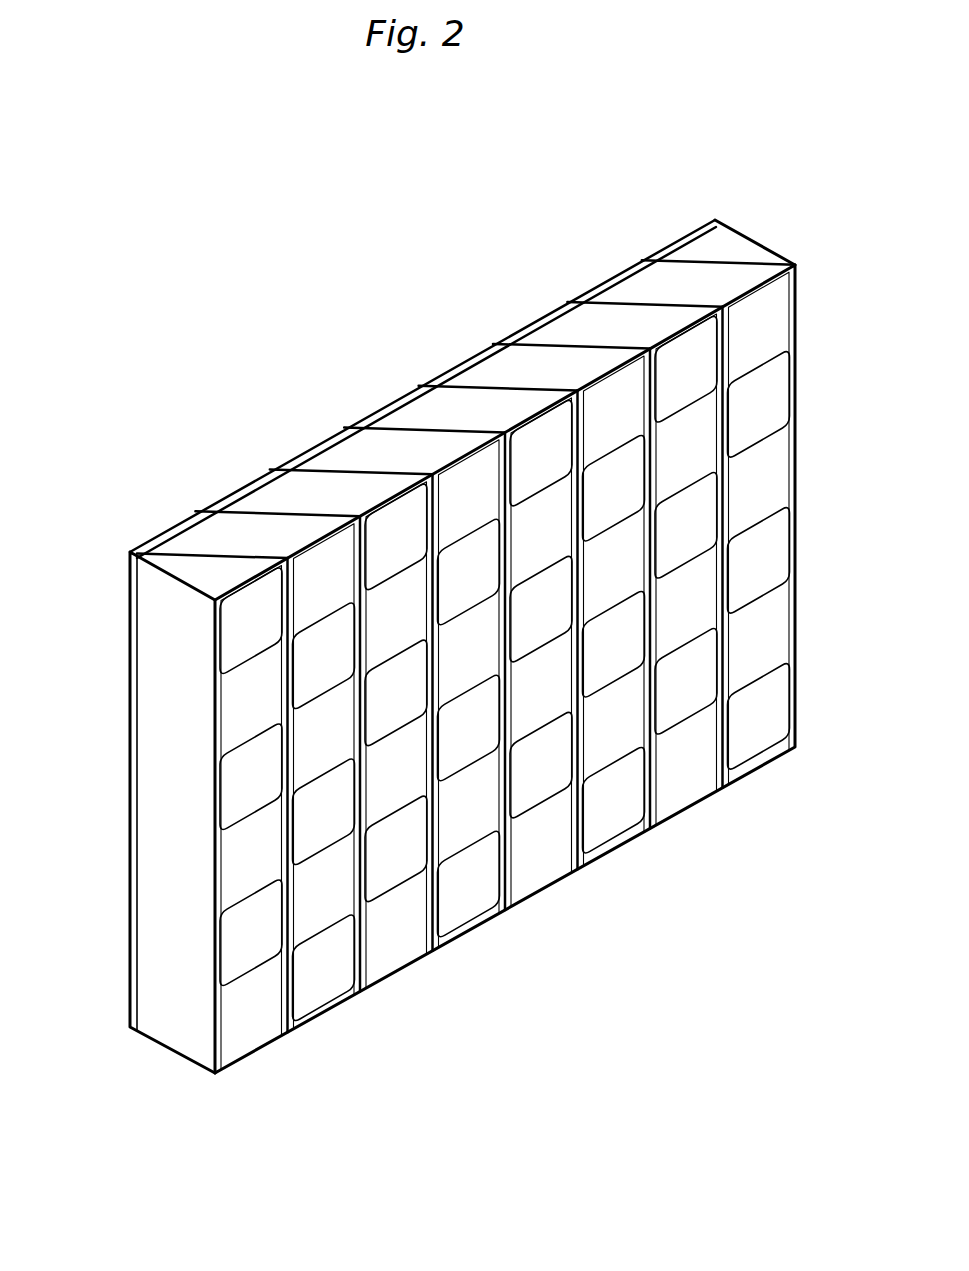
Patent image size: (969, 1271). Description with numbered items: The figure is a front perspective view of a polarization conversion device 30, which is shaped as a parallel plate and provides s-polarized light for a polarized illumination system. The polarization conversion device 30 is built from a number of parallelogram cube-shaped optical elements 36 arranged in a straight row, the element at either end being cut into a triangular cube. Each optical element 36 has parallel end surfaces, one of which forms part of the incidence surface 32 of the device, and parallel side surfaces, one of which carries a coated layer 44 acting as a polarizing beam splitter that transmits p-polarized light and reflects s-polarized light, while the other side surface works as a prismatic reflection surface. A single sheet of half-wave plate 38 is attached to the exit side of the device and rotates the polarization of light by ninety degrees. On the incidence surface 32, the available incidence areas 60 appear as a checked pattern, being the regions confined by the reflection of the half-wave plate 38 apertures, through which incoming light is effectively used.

The polarization conversion device 30 is at (342, 303).
The incidence surface 32 is at (763, 333).
The parallelogram cube-shaped optical element 36 is at (170, 570).
The half-wave plate 38 is at (128, 693).
The coated layer 44 is at (240, 510).
The available incidence area 60 is at (783, 393).